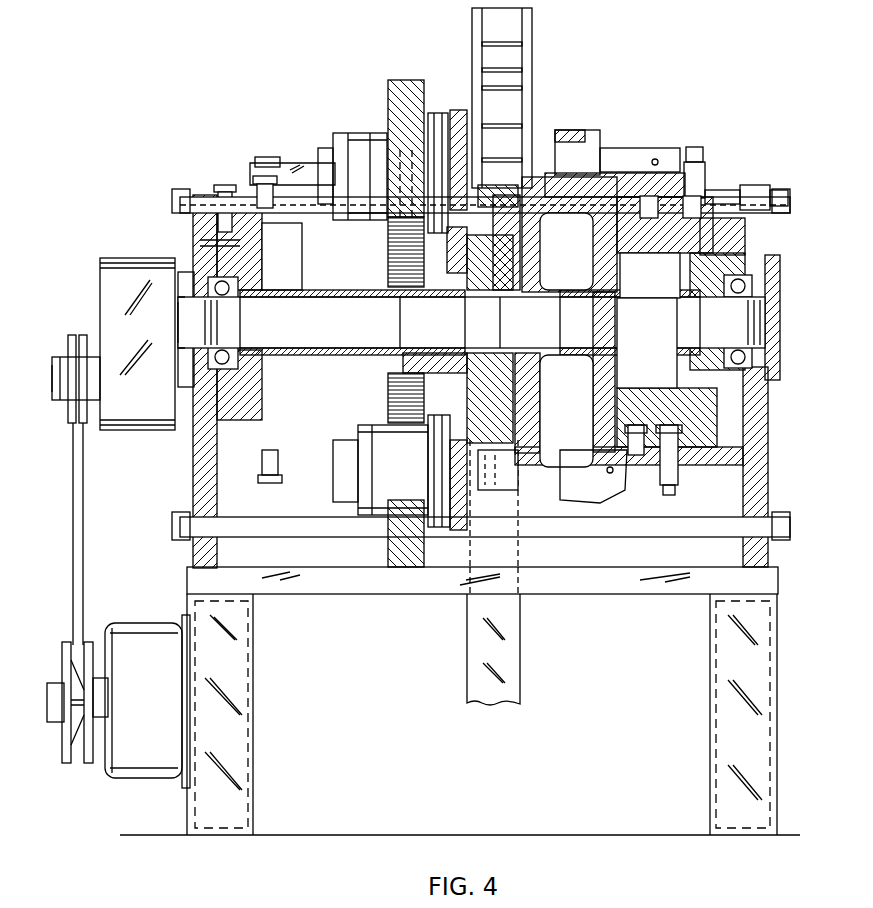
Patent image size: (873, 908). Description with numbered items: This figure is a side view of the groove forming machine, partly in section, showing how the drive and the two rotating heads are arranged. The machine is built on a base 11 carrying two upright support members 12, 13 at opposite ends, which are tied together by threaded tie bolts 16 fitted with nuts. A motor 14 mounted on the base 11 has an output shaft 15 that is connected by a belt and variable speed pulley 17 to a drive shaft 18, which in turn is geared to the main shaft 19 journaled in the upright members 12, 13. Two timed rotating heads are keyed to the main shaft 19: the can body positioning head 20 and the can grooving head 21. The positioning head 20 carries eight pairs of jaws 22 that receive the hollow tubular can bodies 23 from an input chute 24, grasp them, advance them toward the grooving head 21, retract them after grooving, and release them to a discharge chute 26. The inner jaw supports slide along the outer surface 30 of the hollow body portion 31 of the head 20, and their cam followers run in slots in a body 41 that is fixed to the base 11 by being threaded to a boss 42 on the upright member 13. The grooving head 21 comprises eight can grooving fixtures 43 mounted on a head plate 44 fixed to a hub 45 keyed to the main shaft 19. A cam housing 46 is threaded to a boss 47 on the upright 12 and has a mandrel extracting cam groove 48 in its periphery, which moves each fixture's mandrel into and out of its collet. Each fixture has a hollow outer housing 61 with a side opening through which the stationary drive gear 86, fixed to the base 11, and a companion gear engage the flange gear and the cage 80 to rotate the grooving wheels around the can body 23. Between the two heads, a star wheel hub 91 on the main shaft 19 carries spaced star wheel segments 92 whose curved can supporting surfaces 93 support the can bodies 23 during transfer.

The base 11 is at (352, 582).
The upright support member 12 is at (193, 480).
The upright support member 13 is at (766, 485).
The motor 14 is at (152, 696).
The output shaft 15 is at (47, 703).
The tie bolts 16 is at (306, 203).
The belt and variable speed pulley 17 is at (80, 512).
The drive shaft 18 is at (52, 377).
The main shaft 19 is at (352, 337).
The can body positioning head 20 is at (727, 182).
The can grooving head 21 is at (329, 145).
The pairs of jaws 22 is at (596, 118).
The can bodies 23 is at (492, 93).
The input chute 24 is at (510, 46).
The discharge chute 26 is at (518, 660).
The outer surface 30 is at (566, 251).
The hollow body portion 31 is at (578, 380).
The body 41 is at (694, 450).
The boss 42 is at (745, 422).
The can grooving fixtures 43 is at (364, 234).
The head plate 44 is at (440, 113).
The hub 45 is at (402, 364).
The cam housing 46 is at (305, 285).
The boss 47 is at (227, 225).
The mandrel extracting cam groove 48 is at (263, 183).
The outer housing 61 is at (370, 133).
The cage 80 is at (389, 276).
The drive gear 86 is at (405, 250).
The star wheel hub 91 is at (480, 258).
The star wheel segments 92 is at (530, 250).
The can supporting surfaces 93 is at (505, 195).